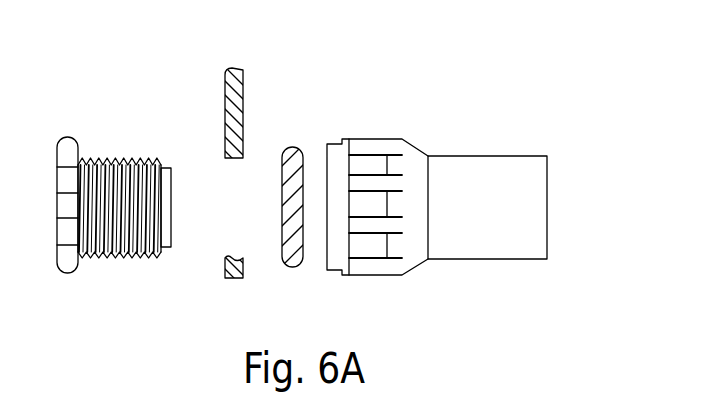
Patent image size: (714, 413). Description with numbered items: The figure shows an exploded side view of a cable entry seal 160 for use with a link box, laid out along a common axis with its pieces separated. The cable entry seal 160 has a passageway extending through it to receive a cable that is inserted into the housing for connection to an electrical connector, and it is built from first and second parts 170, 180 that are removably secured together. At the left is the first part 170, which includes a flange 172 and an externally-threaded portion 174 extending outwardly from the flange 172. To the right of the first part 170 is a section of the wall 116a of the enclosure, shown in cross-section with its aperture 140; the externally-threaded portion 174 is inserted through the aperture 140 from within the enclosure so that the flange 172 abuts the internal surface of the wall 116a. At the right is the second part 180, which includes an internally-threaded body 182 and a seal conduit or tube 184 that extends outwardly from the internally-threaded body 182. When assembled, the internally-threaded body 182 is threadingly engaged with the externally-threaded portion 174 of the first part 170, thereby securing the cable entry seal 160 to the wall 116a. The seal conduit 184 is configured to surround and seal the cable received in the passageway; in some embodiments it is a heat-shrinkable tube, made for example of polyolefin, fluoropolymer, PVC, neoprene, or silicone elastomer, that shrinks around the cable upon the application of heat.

The first part 170 is at (90, 125).
The flange 172 is at (65, 274).
The externally-threaded portion 174 is at (135, 258).
The aperture 140 is at (225, 153).
The wall 116a is at (240, 76).
The cable entry seal 160 is at (372, 95).
The internally-threaded body 182 is at (375, 139).
The second part 180 is at (450, 150).
The seal conduit 184 is at (520, 259).